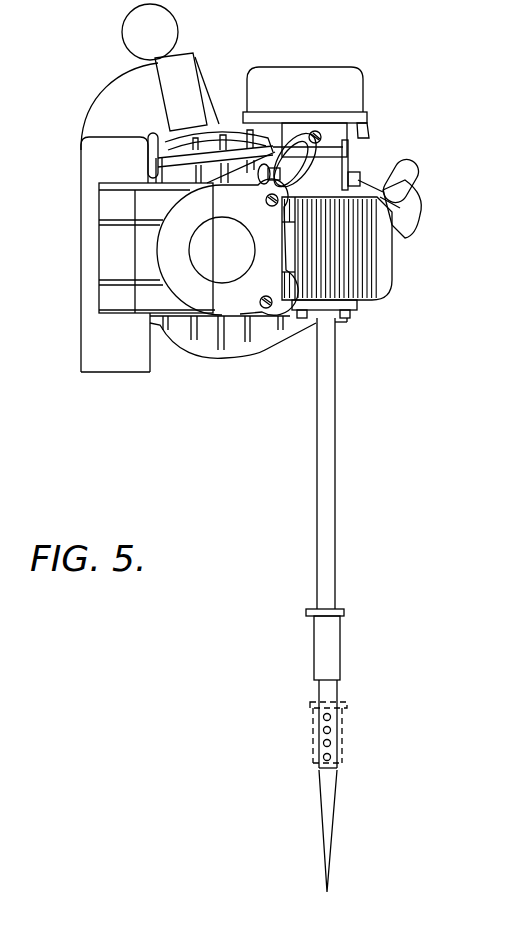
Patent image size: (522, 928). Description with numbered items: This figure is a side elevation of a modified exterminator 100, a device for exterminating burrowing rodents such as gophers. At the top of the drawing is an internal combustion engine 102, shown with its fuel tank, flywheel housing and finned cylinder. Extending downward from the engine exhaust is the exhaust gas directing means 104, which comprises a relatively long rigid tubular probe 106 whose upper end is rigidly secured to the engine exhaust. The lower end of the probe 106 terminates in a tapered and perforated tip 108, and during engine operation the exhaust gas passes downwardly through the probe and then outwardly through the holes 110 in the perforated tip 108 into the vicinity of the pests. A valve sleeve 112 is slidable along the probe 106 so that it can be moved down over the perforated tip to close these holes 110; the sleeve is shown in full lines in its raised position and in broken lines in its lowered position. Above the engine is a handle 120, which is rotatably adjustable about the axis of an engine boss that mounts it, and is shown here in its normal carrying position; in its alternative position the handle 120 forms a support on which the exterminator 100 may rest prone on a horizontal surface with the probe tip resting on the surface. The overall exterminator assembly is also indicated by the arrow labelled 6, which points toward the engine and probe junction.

The modified exterminator 100 is at (428, 33).
The internal combustion engine 102 is at (311, 67).
The exhaust gas directing means 104 is at (335, 415).
The tubular probe 106 is at (335, 478).
The perforated probe tip 108 is at (329, 820).
The holes 110 is at (331, 757).
The valve sleeve 112 is at (317, 660).
The handle 120 is at (123, 23).
The driving tool 6 is at (392, 357).